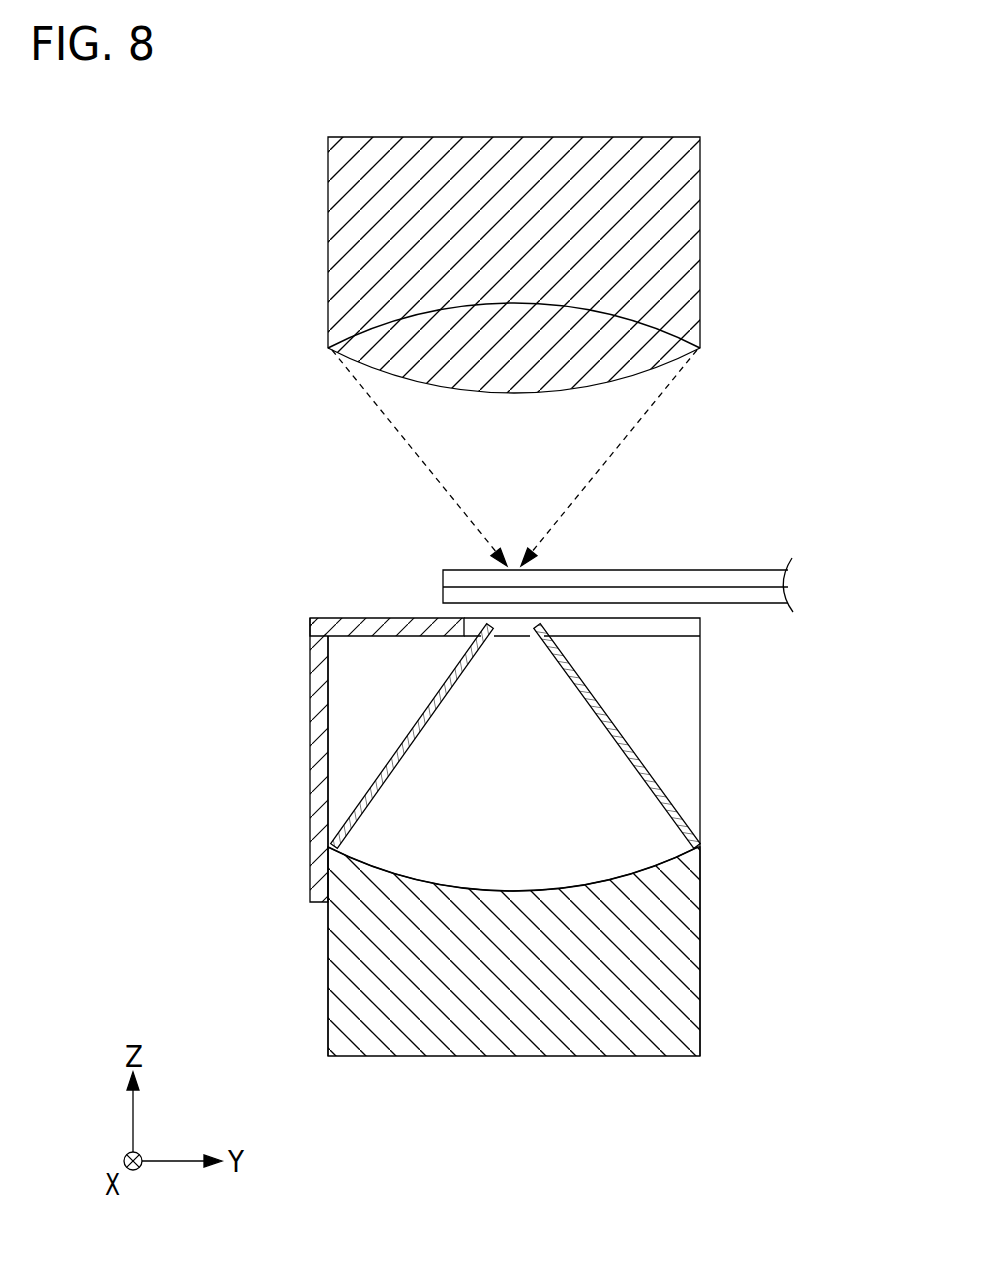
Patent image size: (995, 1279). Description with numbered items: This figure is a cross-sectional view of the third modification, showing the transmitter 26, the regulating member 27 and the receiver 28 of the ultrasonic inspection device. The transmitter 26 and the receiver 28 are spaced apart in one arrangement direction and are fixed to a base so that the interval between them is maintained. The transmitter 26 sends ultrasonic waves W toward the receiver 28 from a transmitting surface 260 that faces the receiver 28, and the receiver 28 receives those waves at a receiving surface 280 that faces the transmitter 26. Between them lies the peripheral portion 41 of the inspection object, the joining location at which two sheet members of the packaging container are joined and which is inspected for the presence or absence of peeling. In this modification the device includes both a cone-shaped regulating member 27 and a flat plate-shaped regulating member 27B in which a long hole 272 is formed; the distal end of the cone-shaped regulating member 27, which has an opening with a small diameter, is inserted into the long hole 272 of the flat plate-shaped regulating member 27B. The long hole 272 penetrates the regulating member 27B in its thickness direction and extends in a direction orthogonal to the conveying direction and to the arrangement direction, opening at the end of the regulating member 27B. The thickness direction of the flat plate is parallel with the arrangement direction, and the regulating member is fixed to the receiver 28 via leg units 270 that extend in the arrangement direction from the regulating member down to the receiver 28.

The transmitter 26 is at (328, 232).
The transmitting surface 260 is at (460, 305).
The light (irradiation light) W is at (514, 458).
The peripheral portion 41 is at (621, 568).
The regulating member 27 is at (436, 697).
The flat plate-shaped regulating member 27B is at (374, 618).
The leg units 270 is at (310, 743).
The long hole 272 is at (624, 637).
The receiver 28 is at (328, 996).
The receiving surface 280 is at (453, 886).